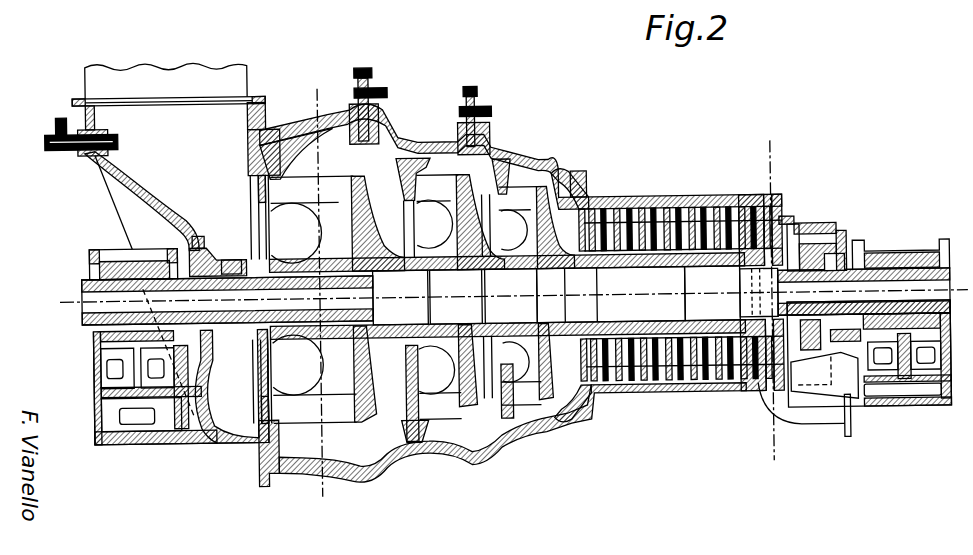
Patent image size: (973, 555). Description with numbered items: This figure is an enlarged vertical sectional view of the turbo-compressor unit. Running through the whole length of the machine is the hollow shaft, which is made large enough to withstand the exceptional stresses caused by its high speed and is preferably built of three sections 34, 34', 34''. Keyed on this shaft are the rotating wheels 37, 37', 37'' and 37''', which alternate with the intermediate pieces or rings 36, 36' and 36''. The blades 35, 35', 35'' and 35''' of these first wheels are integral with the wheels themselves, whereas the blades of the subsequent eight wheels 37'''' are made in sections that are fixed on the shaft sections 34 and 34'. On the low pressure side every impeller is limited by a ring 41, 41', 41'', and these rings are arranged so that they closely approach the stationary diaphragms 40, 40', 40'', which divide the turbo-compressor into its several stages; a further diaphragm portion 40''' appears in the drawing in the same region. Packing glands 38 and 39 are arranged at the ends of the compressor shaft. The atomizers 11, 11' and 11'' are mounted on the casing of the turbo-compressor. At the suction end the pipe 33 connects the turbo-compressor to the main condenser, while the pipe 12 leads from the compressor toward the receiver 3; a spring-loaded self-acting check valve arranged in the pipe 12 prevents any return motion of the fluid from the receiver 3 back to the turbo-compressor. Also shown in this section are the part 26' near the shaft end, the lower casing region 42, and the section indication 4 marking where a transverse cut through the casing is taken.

The pipe 33 is at (165, 82).
The receiver 3 is at (309, 77).
The section line 4- 4 is at (774, 306).
The atomizer 11 is at (463, 120).
The atomizer 11' is at (358, 106).
The atomizer 11'' is at (81, 147).
The pipe 12 is at (822, 437).
The bearing cap 26' is at (901, 239).
The shaft section 34 is at (255, 299).
The shaft section 34' is at (713, 293).
The shaft section 34'' is at (864, 291).
The blades 35 is at (311, 189).
The blades 35' is at (437, 188).
The blades 35'' is at (518, 199).
The blades 35''' is at (607, 213).
The intermediate ring 36 is at (375, 188).
The intermediate ring 36' is at (480, 222).
The intermediate ring 36'' is at (563, 225).
The rotating wheel 37 is at (364, 224).
The rotating wheel 37' is at (456, 296).
The rotating wheel 37'' is at (513, 296).
The rotating wheel 37''' is at (610, 289).
The subsequent wheels 37'''' is at (682, 211).
The packing gland 38 is at (219, 252).
The packing gland 39 is at (238, 264).
The stationary diaphragm 40 is at (297, 153).
The stationary diaphragm 40' is at (429, 177).
The stationary diaphragm 40'' is at (516, 177).
The nozzle block 40''' is at (570, 173).
The ring 41 is at (296, 223).
The ring 41' is at (434, 224).
The ring 41'' is at (513, 230).
The exhaust chamber 42 is at (314, 408).